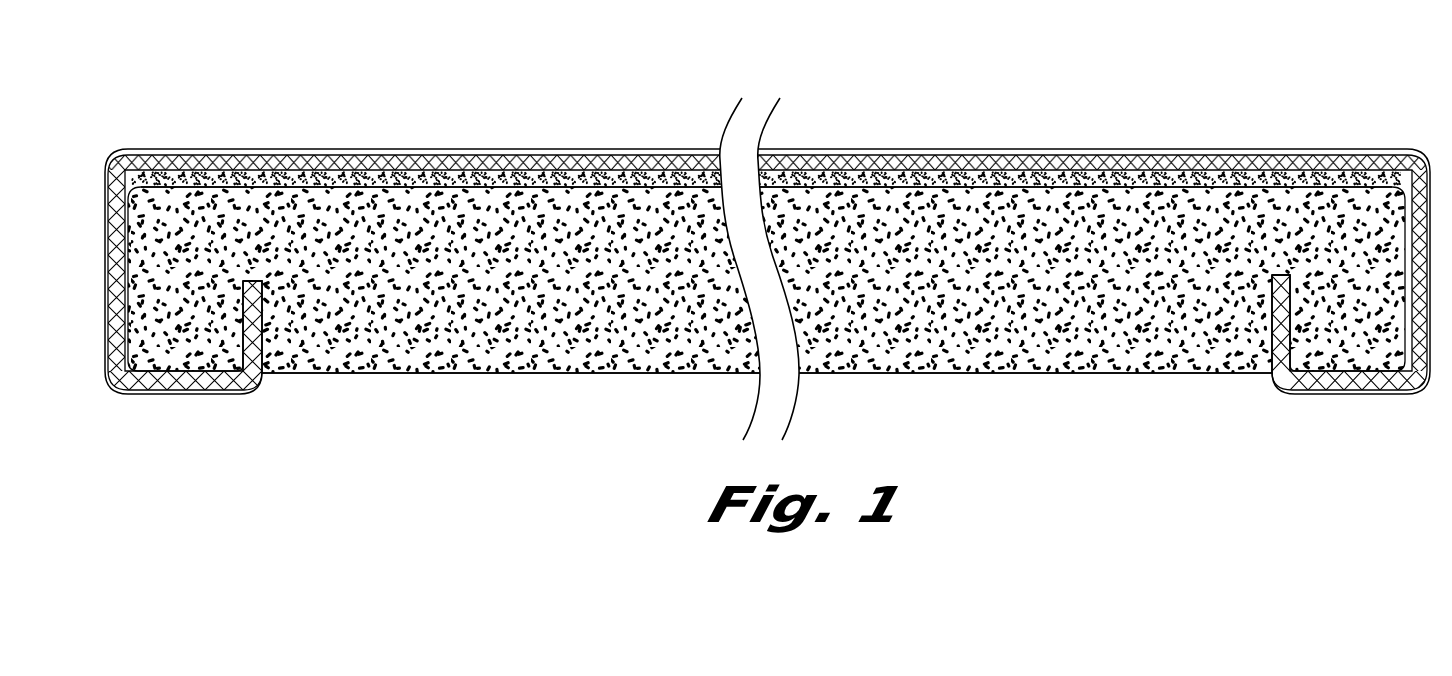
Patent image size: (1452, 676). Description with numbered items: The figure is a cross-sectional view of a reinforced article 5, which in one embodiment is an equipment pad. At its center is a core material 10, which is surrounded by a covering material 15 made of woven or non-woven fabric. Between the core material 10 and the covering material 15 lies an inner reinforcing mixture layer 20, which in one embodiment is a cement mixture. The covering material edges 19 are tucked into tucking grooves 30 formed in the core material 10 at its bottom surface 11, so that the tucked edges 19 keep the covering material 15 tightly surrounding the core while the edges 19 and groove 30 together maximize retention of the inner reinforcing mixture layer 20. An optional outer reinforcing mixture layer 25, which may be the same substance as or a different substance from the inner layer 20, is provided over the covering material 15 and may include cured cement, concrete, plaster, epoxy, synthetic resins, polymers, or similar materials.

The reinforced article 5 is at (1132, 119).
The core material 10 is at (1228, 212).
The bottom surface 11 is at (433, 378).
The covering material 15 is at (415, 165).
The covering material edges 19 is at (263, 369).
The inner reinforcing mixture layer 20 is at (953, 183).
The outer reinforcing mixture layer 25 is at (543, 152).
The tucking groove 30 is at (1258, 322).